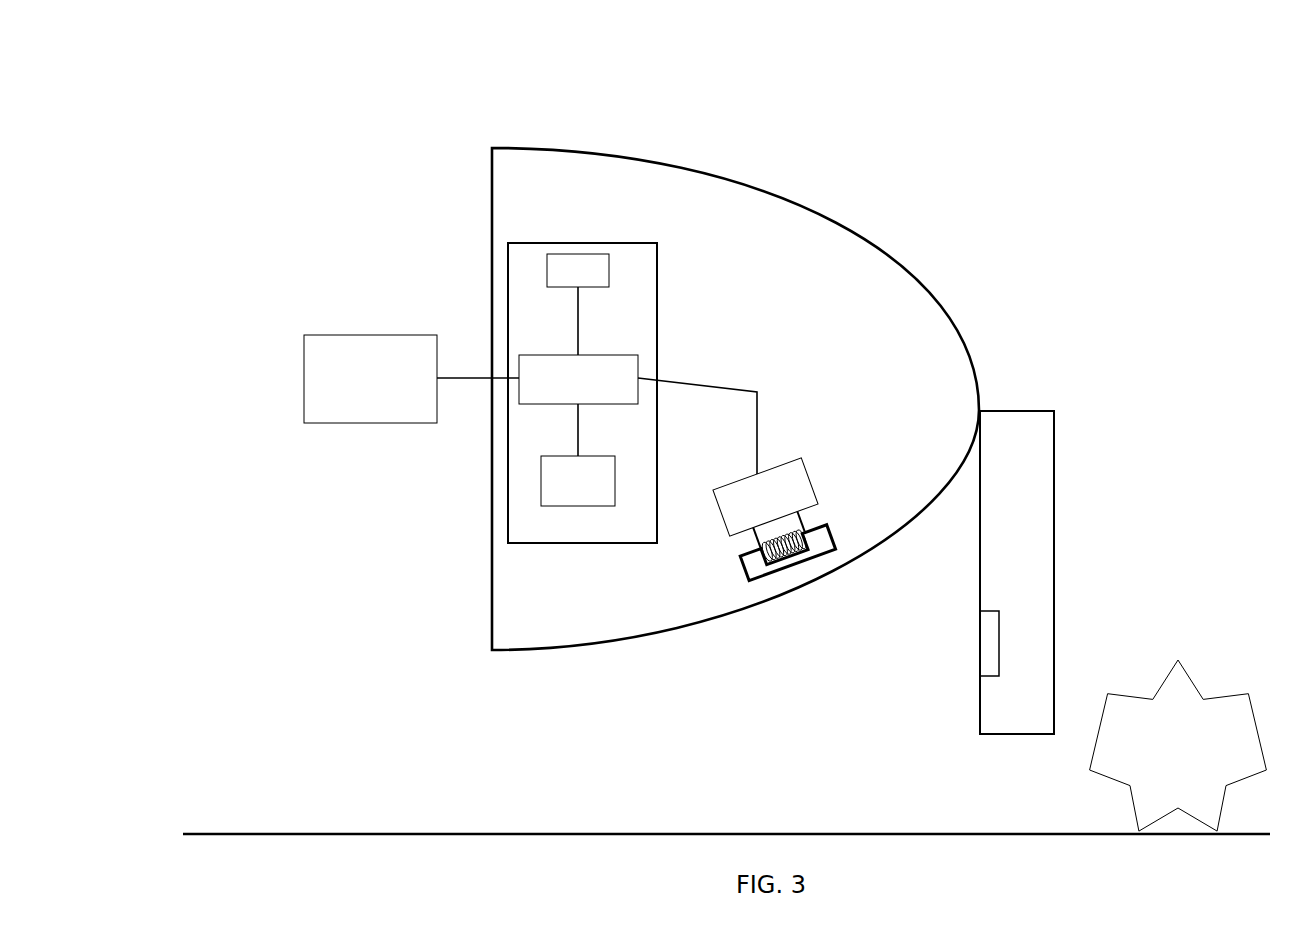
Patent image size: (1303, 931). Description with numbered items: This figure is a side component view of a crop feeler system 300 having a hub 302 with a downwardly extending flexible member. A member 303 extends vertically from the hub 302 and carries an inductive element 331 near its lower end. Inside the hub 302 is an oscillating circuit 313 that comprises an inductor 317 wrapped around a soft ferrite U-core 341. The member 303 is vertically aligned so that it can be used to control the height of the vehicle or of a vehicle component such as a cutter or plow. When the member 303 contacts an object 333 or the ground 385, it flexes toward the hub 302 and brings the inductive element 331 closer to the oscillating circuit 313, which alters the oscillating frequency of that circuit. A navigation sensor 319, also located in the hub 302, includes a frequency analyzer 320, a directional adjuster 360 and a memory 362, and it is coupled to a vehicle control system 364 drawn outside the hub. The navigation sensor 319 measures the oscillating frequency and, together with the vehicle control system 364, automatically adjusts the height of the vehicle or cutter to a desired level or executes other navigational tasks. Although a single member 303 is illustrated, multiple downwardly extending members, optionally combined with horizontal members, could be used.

The crop feeler system 300 is at (355, 72).
The hub 302 is at (771, 274).
The member 303 is at (1037, 558).
The navigation sensor 319 is at (657, 254).
The oscillating circuit 313 is at (784, 569).
The inductor 317 is at (807, 576).
The soft ferrite U-core 341 is at (740, 561).
The directional adjuster 360 is at (599, 394).
The memory 362 is at (599, 284).
The frequency analyzer 320 is at (599, 495).
The vehicle control system 364 is at (391, 394).
The inductive element 331 is at (994, 663).
The object 333 is at (1199, 762).
The ground 385 is at (353, 833).